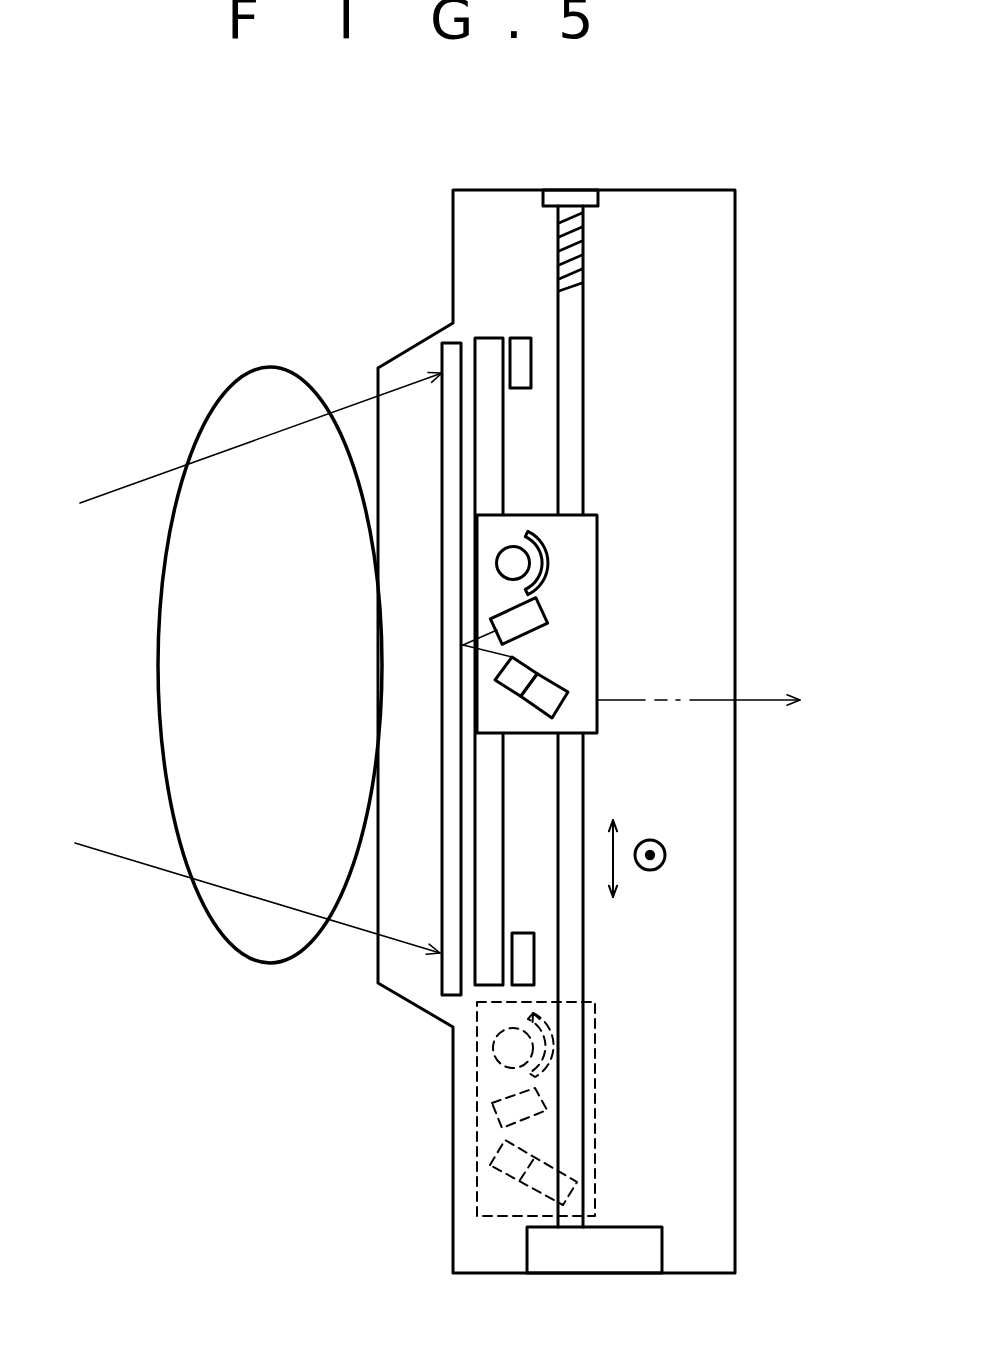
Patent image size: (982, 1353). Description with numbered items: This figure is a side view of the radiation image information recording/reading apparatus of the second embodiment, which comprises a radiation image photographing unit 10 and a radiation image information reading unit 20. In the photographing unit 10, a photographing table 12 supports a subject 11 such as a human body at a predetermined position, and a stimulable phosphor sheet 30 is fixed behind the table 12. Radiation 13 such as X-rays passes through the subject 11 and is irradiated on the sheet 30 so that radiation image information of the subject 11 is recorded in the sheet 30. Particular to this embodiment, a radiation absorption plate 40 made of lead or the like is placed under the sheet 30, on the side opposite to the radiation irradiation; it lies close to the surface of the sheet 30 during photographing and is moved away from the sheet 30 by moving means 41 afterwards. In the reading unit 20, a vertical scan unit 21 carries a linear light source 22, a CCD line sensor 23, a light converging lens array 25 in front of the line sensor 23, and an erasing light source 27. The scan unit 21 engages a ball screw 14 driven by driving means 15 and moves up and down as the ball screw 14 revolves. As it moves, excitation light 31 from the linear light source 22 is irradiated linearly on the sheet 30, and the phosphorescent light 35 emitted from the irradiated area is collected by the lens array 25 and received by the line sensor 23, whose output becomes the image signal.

The radiation image photographing unit 10 is at (358, 325).
The subject 11 is at (267, 947).
The photographing table 12 is at (377, 972).
The radiation 13 is at (125, 857).
The ball screw 14 is at (573, 315).
The driving means 15 is at (652, 1253).
The radiation image information reading unit 20 is at (620, 475).
The vertical scan unit 21 is at (585, 720).
The linear light source 22 is at (528, 618).
The CCD line sensor 23 is at (550, 692).
The light converging lens array 25 is at (518, 672).
The erasing light source 27 is at (518, 565).
The stimulable phosphor sheet 30 is at (450, 807).
The excitation light 31 is at (492, 632).
The phosphorescent light 35 is at (500, 668).
The radiation absorption plate 40 is at (485, 340).
The moving means 41 is at (522, 338).